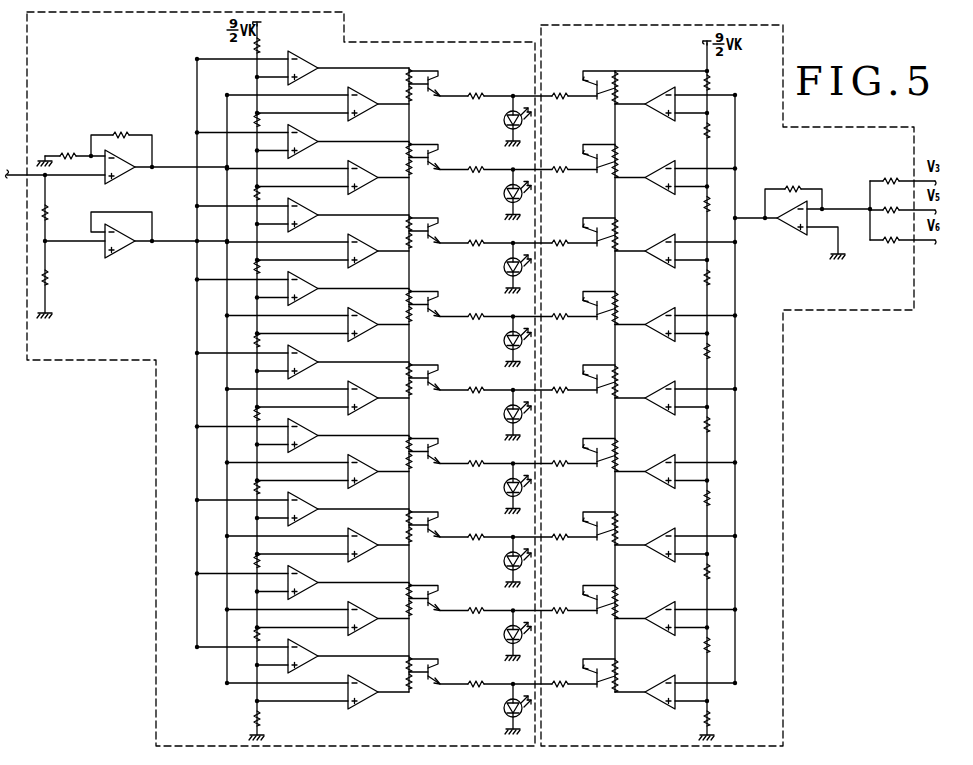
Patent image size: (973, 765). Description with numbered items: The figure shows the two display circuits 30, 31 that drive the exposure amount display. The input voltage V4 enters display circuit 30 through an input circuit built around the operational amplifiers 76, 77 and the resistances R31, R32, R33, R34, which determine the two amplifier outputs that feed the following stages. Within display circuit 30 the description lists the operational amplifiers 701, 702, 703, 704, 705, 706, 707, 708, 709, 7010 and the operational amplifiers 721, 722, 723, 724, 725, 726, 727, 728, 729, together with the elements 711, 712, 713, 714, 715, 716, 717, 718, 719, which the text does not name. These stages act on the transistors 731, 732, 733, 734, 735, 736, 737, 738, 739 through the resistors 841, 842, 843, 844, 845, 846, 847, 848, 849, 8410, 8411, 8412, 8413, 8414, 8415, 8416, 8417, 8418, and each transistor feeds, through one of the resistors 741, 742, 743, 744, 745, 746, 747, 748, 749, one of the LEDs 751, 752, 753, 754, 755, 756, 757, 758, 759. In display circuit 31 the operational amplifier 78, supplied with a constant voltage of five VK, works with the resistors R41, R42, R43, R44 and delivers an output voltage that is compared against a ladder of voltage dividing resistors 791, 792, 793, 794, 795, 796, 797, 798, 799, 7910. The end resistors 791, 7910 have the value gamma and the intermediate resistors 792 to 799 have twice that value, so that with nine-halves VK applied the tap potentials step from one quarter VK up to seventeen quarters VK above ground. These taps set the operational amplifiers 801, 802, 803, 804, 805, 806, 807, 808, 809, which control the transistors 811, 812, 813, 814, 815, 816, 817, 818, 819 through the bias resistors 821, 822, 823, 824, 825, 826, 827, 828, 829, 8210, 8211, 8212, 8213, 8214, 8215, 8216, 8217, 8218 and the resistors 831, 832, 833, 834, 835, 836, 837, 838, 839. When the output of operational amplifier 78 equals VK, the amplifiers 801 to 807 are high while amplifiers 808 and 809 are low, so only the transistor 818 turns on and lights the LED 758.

The display circuit 30 is at (95, 361).
The display circuit 31 is at (784, 352).
The operational amplifier 76 is at (113, 179).
The operational amplifier 77 is at (113, 253).
The operational amplifier 78 is at (792, 229).
The operational amplifier 701 is at (267, 43).
The operational amplifier 702 is at (267, 117).
The operational amplifier 703 is at (267, 190).
The operational amplifier 704 is at (267, 264).
The operational amplifier 705 is at (267, 337).
The operational amplifier 706 is at (267, 411).
The operational amplifier 707 is at (267, 484).
The operational amplifier 708 is at (267, 558).
The operational amplifier 709 is at (267, 631).
The operational amplifier 7010 is at (270, 719).
The comparator 711 is at (302, 65).
The comparator 712 is at (302, 139).
The comparator 713 is at (302, 212).
The comparator 714 is at (302, 286).
The comparator 715 is at (302, 359).
The comparator 716 is at (302, 433).
The comparator 717 is at (302, 506).
The comparator 718 is at (302, 580).
The comparator 719 is at (302, 653).
The operational amplifier 721 is at (317, 100).
The operational amplifier 722 is at (317, 174).
The operational amplifier 723 is at (317, 247).
The operational amplifier 724 is at (317, 321).
The operational amplifier 725 is at (317, 394).
The operational amplifier 726 is at (317, 468).
The operational amplifier 727 is at (317, 541).
The operational amplifier 728 is at (317, 615).
The operational amplifier 729 is at (317, 688).
The transistor 731 is at (438, 83).
The transistor 732 is at (438, 157).
The transistor 733 is at (438, 230).
The transistor 734 is at (438, 304).
The transistor 735 is at (438, 377).
The transistor 736 is at (438, 451).
The transistor 737 is at (438, 524).
The transistor 738 is at (438, 598).
The transistor 739 is at (438, 671).
The resistor 741 is at (510, 105).
The resistor 742 is at (510, 179).
The resistor 743 is at (510, 252).
The resistor 744 is at (510, 326).
The resistor 745 is at (510, 399).
The resistor 746 is at (510, 473).
The resistor 747 is at (510, 546).
The resistor 748 is at (510, 620).
The resistor 749 is at (510, 693).
The LED 751 is at (506, 120).
The LED 752 is at (506, 193).
The LED 753 is at (506, 267).
The LED 754 is at (506, 340).
The LED 755 is at (506, 414).
The LED 756 is at (506, 487).
The LED 757 is at (506, 561).
The LED 758 is at (506, 634).
The LED 759 is at (506, 708).
The voltage dividing resistor 791 is at (717, 84).
The voltage dividing resistor 792 is at (717, 131).
The voltage dividing resistor 793 is at (717, 205).
The voltage dividing resistor 794 is at (717, 278).
The voltage dividing resistor 795 is at (717, 352).
The voltage dividing resistor 796 is at (717, 425).
The voltage dividing resistor 797 is at (717, 499).
The voltage dividing resistor 798 is at (717, 572).
The voltage dividing resistor 799 is at (717, 646).
The voltage dividing resistor 7910 is at (720, 719).
The operational amplifier 801 is at (676, 113).
The operational amplifier 802 is at (676, 187).
The operational amplifier 803 is at (676, 260).
The operational amplifier 804 is at (676, 334).
The operational amplifier 805 is at (676, 407).
The operational amplifier 806 is at (676, 481).
The operational amplifier 807 is at (676, 554).
The operational amplifier 808 is at (676, 628).
The operational amplifier 809 is at (676, 701).
The transistor 811 is at (592, 85).
The transistor 812 is at (592, 159).
The transistor 813 is at (592, 232).
The transistor 814 is at (592, 306).
The transistor 815 is at (592, 379).
The transistor 816 is at (592, 453).
The transistor 817 is at (592, 526).
The transistor 818 is at (592, 600).
The transistor 819 is at (592, 673).
The bias resistor 821 is at (625, 81).
The bias resistor 822 is at (625, 97).
The bias resistor 823 is at (625, 155).
The bias resistor 824 is at (625, 171).
The bias resistor 825 is at (625, 228).
The bias resistor 826 is at (625, 244).
The bias resistor 827 is at (625, 302).
The bias resistor 828 is at (625, 318).
The bias resistor 829 is at (625, 375).
The bias resistor 8210 is at (628, 391).
The bias resistor 8211 is at (628, 449).
The bias resistor 8212 is at (628, 465).
The bias resistor 8213 is at (628, 522).
The bias resistor 8214 is at (628, 538).
The bias resistor 8215 is at (628, 596).
The bias resistor 8216 is at (628, 612).
The bias resistor 8217 is at (628, 669).
The bias resistor 8218 is at (628, 685).
The resistor 831 is at (573, 107).
The resistor 832 is at (573, 181).
The resistor 833 is at (573, 254).
The resistor 834 is at (573, 328).
The resistor 835 is at (573, 401).
The resistor 836 is at (573, 475).
The resistor 837 is at (573, 548).
The resistor 838 is at (573, 622).
The resistor 839 is at (573, 695).
The resistor 841 is at (421, 66).
The resistor 842 is at (421, 102).
The resistor 843 is at (421, 140).
The resistor 844 is at (421, 176).
The resistor 845 is at (421, 213).
The resistor 846 is at (421, 249).
The resistor 847 is at (421, 287).
The resistor 848 is at (421, 323).
The resistor 849 is at (421, 360).
The resistor 8410 is at (424, 396).
The resistor 8411 is at (424, 434).
The resistor 8412 is at (424, 470).
The resistor 8413 is at (424, 507).
The resistor 8414 is at (424, 543).
The resistor 8415 is at (424, 581).
The resistor 8416 is at (424, 617).
The resistor 8417 is at (424, 654).
The resistor 8418 is at (424, 690).
The resistance R31 is at (71, 150).
The resistance R32 is at (121, 140).
The resistance R33 is at (55, 208).
The resistance R34 is at (52, 279).
The resistor R41 is at (903, 171).
The resistor R42 is at (903, 200).
The resistor R43 is at (903, 230).
The resistor R44 is at (793, 193).
The input voltage V4 is at (56, 183).